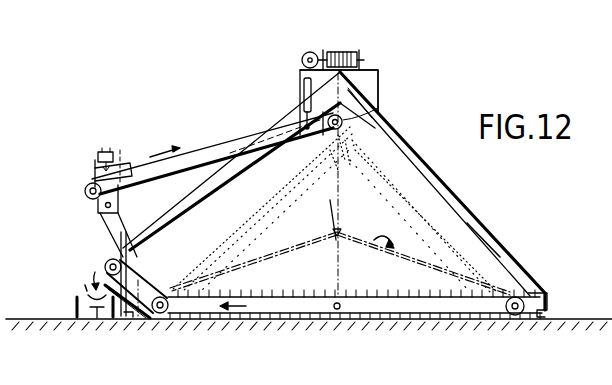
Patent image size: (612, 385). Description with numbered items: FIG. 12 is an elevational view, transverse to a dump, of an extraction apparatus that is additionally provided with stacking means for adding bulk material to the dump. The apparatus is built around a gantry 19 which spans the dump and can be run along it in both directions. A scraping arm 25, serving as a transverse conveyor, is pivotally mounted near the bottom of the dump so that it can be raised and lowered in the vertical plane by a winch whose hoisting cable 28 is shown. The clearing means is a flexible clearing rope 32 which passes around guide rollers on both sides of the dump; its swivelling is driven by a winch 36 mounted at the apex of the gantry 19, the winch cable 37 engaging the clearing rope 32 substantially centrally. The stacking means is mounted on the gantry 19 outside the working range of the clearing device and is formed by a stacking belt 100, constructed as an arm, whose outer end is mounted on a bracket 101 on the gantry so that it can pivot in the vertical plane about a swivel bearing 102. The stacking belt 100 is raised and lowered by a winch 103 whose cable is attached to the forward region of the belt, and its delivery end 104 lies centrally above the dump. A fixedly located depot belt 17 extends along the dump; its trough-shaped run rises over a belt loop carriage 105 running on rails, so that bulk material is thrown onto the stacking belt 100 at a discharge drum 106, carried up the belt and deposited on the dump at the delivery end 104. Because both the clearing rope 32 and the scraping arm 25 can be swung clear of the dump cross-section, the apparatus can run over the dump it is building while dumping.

The depot belt 17 is at (97, 322).
The gantry 19 is at (436, 163).
The scraping arm 25 is at (446, 303).
The hoisting cable 28 is at (330, 213).
The clearing rope 32 is at (383, 244).
The winch 36 is at (344, 52).
The winch cable 37 is at (341, 229).
The stacking belt 100 is at (197, 156).
The bracket 101 is at (117, 231).
The swivel bearing 102 is at (98, 208).
The winch 103 is at (307, 118).
The delivery end 104 is at (378, 110).
The belt loop carriage 105 is at (95, 164).
The discharge drum 106 is at (105, 152).